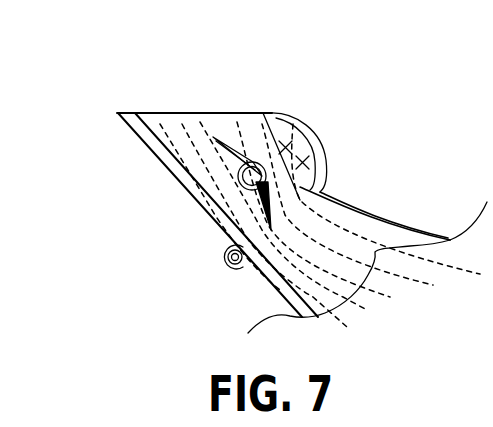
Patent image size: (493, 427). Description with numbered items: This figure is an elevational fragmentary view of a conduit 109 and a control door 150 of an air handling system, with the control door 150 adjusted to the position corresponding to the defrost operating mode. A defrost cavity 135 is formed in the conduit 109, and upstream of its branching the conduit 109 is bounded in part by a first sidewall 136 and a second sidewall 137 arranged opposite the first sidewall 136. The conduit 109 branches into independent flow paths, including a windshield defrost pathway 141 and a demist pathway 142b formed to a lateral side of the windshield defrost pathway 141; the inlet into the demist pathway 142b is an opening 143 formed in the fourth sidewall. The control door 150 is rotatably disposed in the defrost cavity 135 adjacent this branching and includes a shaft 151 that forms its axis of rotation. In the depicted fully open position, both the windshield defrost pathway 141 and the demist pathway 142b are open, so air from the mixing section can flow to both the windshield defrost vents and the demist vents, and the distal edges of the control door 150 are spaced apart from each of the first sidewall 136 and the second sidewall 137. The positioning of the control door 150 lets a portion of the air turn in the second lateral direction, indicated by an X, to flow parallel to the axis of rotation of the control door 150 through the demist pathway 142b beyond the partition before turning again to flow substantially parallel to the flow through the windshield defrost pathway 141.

The windshield defrost pathway 141 is at (160, 106).
The conduit 109 is at (200, 120).
The opening 143 is at (288, 122).
The demist pathway 142b is at (294, 122).
The control door 150 is at (218, 167).
The shaft 151 is at (239, 179).
The second sidewall 137 is at (338, 203).
The first sidewall 136 is at (205, 202).
The defrost cavity 135 is at (270, 269).